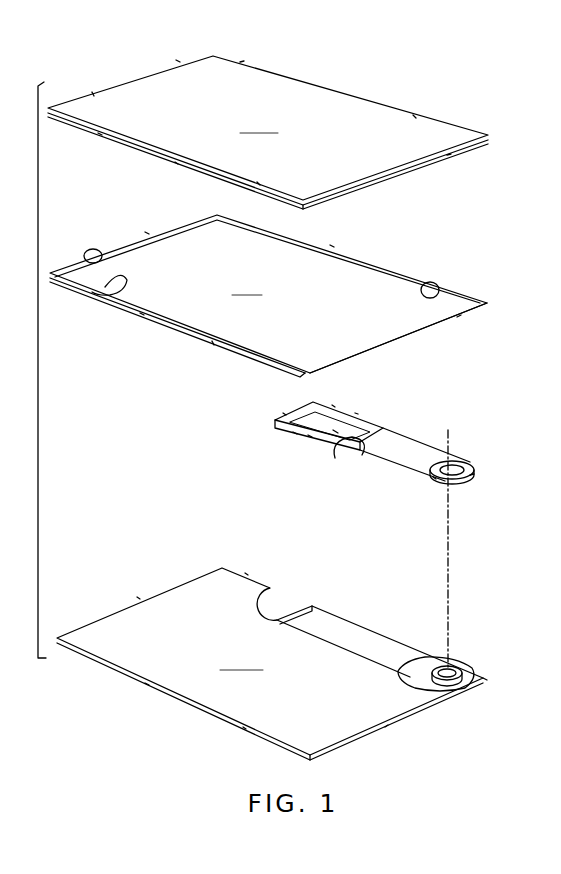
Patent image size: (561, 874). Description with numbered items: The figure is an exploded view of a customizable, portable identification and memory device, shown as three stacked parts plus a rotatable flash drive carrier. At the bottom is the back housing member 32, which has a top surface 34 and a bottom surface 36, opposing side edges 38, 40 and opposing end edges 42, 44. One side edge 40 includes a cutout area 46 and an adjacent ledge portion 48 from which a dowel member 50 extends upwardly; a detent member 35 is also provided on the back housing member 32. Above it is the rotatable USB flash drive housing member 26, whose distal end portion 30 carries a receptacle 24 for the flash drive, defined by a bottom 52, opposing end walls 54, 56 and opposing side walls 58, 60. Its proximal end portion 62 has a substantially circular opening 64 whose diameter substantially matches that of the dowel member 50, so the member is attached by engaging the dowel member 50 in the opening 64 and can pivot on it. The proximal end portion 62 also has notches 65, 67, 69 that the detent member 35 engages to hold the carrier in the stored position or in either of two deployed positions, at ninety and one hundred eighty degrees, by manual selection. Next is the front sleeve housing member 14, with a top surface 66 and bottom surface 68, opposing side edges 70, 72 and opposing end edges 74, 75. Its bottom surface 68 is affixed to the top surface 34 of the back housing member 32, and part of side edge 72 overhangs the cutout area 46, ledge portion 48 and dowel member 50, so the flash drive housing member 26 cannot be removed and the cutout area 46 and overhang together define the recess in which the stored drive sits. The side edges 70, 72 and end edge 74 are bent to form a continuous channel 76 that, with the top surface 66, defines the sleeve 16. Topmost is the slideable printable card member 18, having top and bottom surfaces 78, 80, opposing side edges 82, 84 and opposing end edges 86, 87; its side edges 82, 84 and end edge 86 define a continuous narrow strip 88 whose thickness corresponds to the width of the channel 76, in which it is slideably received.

The front sleeve housing member 14 is at (387, 257).
The sleeve 16 is at (332, 317).
The printable card member 18 is at (288, 67).
The receptacle 24 is at (312, 418).
The rotatable USB flash drive housing member 26 is at (355, 413).
The distal end portion 30 is at (293, 432).
The back housing member 32 is at (224, 556).
The top surface 34 is at (241, 658).
The detent member 35 is at (427, 680).
The bottom surface 36 is at (243, 727).
The side edge 38 is at (145, 683).
The side edge 40 is at (245, 573).
The end edge 42 is at (137, 597).
The end edge 44 is at (385, 727).
The cutout area 46 is at (332, 632).
The ledge portion 48 is at (483, 678).
The dowel member 50 is at (453, 673).
The bottom 52 is at (333, 430).
The end wall 54 is at (283, 413).
The end wall 56 is at (348, 438).
The side wall 58 is at (308, 435).
The side wall 60 is at (332, 405).
The proximal end portion 62 is at (453, 448).
The circular opening 64 is at (473, 465).
The notch 65 is at (433, 477).
The top surface 66 is at (247, 283).
The notch 67 is at (470, 475).
The bottom surface 68 is at (212, 343).
The notch 69 is at (468, 458).
The side edge 70 is at (140, 313).
The side edge 72 is at (330, 245).
The end edge 74 is at (145, 232).
The end edge 75 is at (457, 317).
The continuous channel 76 is at (98, 250).
The top surface 78 is at (259, 120).
The bottom surface 80 is at (175, 162).
The side edge 82 is at (98, 133).
The side edge 84 is at (240, 62).
The end edge 86 is at (176, 60).
The end edge 87 is at (447, 155).
The continuous narrow strip 88 is at (92, 92).